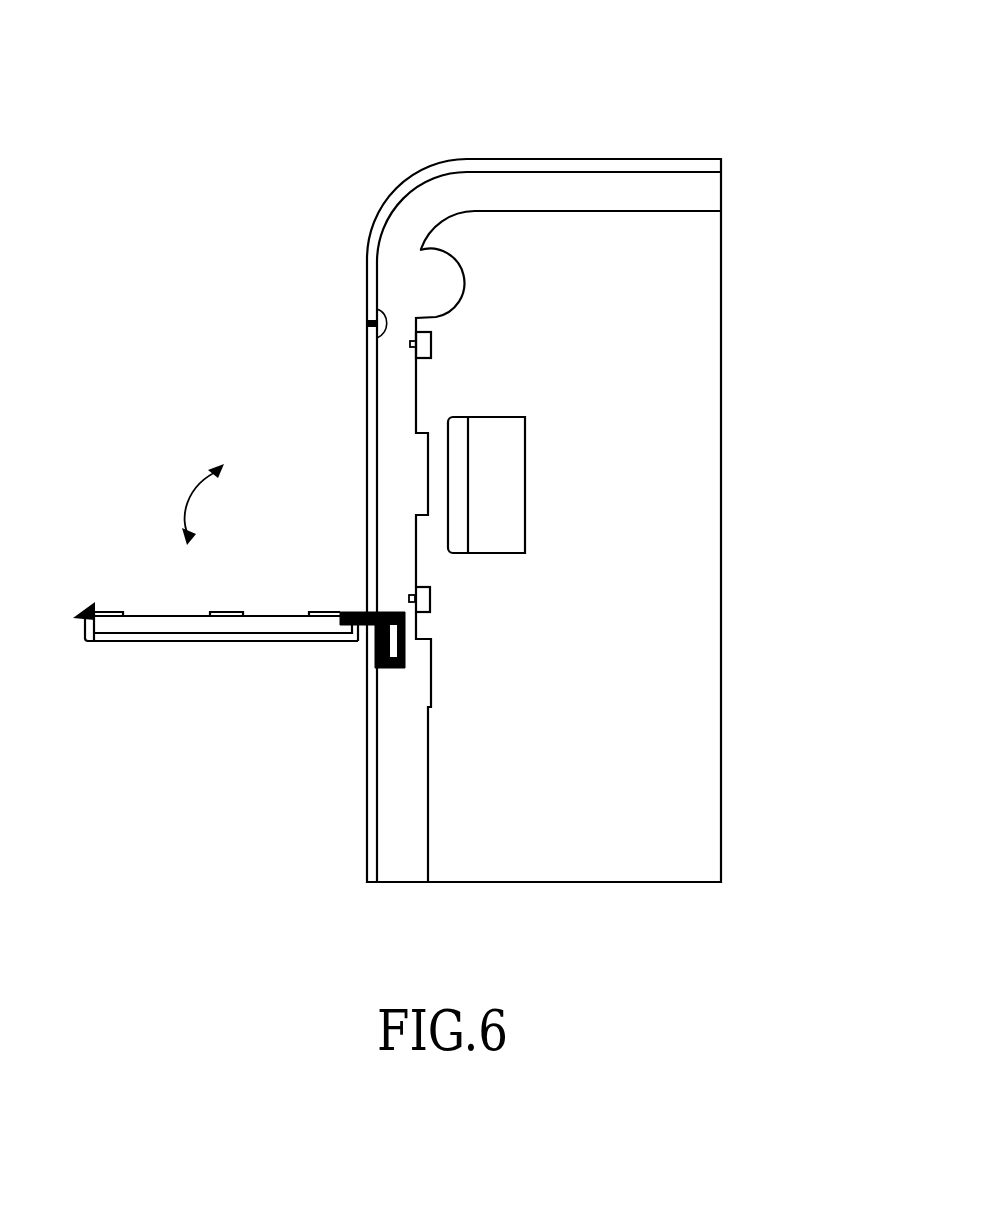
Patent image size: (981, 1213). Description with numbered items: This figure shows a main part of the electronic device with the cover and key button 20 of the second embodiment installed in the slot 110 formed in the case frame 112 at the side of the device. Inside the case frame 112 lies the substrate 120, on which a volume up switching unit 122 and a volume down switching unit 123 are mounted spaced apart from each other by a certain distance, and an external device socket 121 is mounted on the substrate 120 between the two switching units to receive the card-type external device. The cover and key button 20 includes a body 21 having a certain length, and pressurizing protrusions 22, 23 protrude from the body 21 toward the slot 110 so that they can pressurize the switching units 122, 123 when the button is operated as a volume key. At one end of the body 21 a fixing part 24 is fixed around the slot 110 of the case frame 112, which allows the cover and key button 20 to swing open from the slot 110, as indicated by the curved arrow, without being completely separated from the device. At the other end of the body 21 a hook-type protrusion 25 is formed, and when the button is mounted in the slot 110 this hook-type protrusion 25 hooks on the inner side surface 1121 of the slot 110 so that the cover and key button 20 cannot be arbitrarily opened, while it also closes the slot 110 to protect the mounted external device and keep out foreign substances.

The slot 110 is at (369, 503).
The case frame 112 is at (601, 160).
The inner side surface 1121 is at (376, 340).
The substrate 120 is at (647, 547).
The external device socket 121 is at (508, 485).
The volume up switching unit 122 is at (420, 597).
The volume down switching unit 123 is at (422, 350).
The cover and key button 20 is at (192, 642).
The body 21 is at (157, 625).
The pressurizing protrusion 22 is at (318, 611).
The pressurizing protrusion 23 is at (113, 612).
The fixing part 24 is at (370, 655).
The hook-type protrusion 25 is at (90, 606).